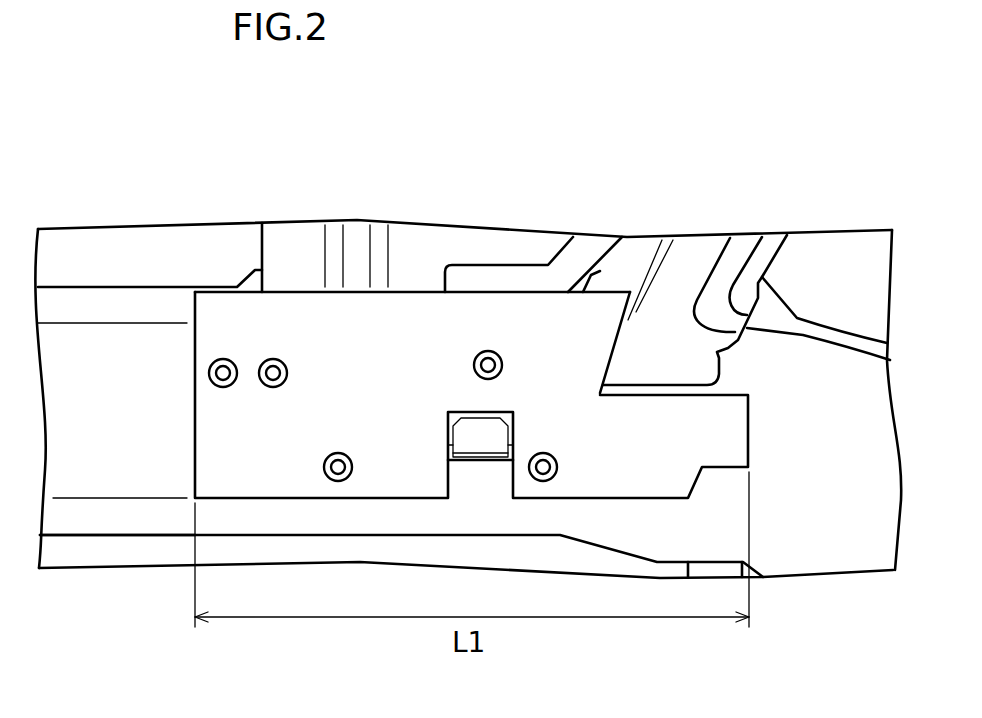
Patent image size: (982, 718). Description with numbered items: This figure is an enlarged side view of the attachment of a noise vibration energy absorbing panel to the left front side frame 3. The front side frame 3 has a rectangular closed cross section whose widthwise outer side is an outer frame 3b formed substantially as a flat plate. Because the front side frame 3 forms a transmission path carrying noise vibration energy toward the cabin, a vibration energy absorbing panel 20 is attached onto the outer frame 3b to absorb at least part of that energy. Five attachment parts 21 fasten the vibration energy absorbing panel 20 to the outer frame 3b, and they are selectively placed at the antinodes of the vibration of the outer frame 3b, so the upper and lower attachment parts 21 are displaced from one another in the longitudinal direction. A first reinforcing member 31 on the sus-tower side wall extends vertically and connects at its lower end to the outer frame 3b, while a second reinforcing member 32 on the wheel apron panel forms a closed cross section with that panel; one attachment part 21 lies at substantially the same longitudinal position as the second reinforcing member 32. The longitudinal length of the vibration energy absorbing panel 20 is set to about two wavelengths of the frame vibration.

The front side frame 3 is at (128, 248).
The outer frame 3b is at (98, 470).
The vibration energy absorbing panel 20 is at (212, 310).
The attachment parts 21 is at (273, 358).
The first reinforcing member 31 is at (692, 258).
The second reinforcing member 32 is at (416, 237).